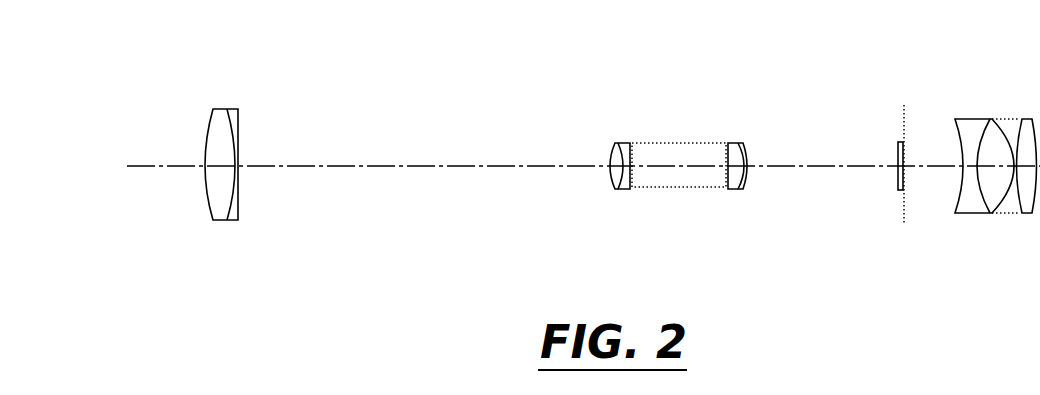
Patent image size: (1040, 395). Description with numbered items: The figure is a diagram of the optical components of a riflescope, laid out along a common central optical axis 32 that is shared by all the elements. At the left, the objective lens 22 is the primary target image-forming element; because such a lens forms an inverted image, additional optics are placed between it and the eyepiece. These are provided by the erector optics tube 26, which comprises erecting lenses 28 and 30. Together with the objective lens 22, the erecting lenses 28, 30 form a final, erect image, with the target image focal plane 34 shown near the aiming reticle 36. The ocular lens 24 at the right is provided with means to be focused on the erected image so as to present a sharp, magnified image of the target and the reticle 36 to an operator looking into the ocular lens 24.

The objective lens 22 is at (218, 110).
The ocular lens 24 is at (1005, 119).
The erector optics tube 26 is at (668, 143).
The erecting lens 28 is at (621, 143).
The erecting lens 30 is at (738, 190).
The optical axis 32 is at (356, 166).
The target image focal plane 34 is at (903, 212).
The aiming reticle 36 is at (885, 148).